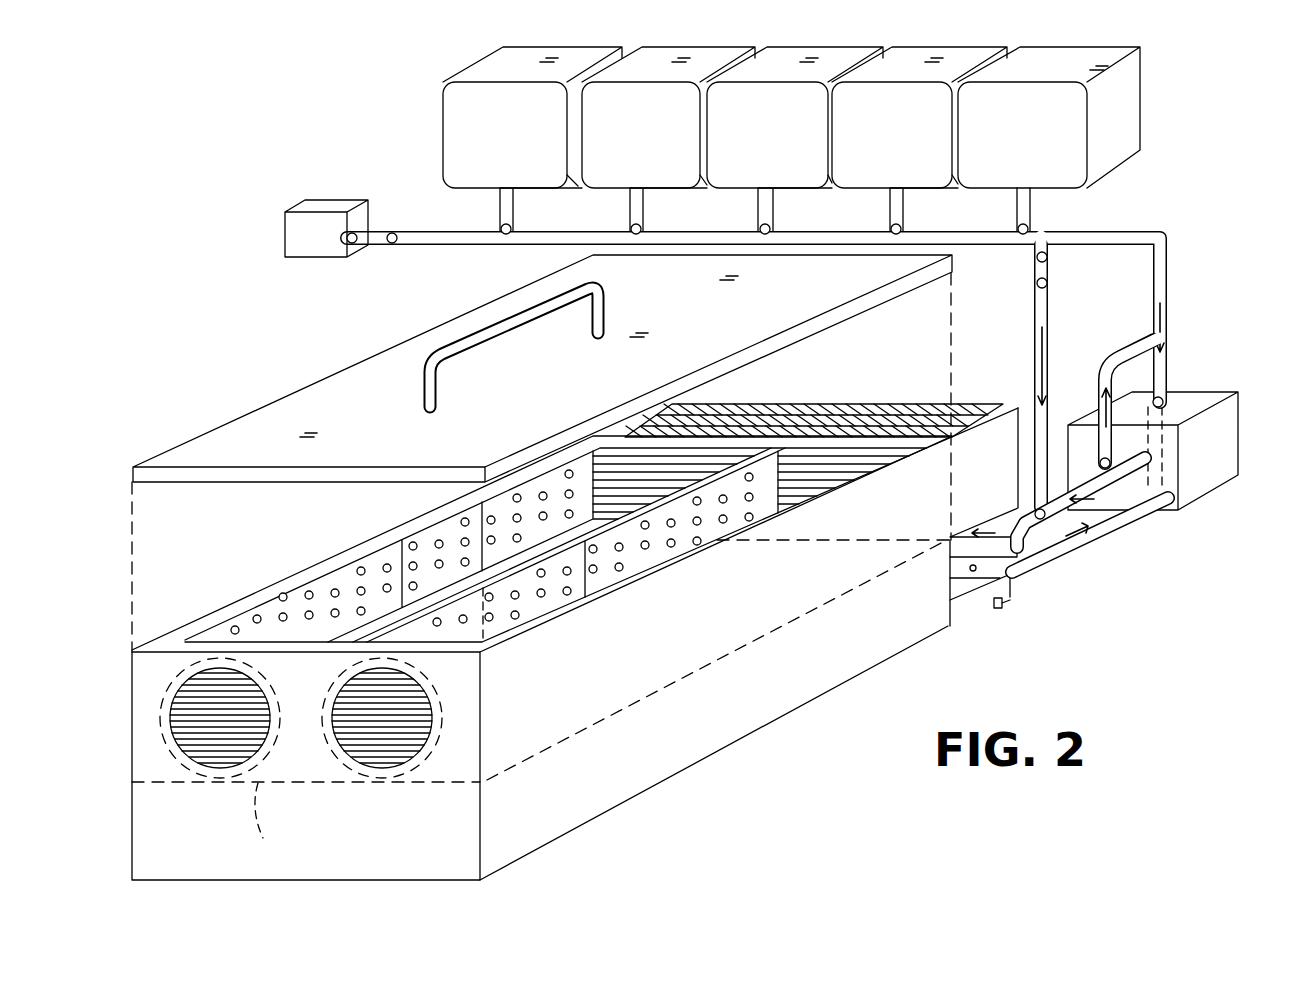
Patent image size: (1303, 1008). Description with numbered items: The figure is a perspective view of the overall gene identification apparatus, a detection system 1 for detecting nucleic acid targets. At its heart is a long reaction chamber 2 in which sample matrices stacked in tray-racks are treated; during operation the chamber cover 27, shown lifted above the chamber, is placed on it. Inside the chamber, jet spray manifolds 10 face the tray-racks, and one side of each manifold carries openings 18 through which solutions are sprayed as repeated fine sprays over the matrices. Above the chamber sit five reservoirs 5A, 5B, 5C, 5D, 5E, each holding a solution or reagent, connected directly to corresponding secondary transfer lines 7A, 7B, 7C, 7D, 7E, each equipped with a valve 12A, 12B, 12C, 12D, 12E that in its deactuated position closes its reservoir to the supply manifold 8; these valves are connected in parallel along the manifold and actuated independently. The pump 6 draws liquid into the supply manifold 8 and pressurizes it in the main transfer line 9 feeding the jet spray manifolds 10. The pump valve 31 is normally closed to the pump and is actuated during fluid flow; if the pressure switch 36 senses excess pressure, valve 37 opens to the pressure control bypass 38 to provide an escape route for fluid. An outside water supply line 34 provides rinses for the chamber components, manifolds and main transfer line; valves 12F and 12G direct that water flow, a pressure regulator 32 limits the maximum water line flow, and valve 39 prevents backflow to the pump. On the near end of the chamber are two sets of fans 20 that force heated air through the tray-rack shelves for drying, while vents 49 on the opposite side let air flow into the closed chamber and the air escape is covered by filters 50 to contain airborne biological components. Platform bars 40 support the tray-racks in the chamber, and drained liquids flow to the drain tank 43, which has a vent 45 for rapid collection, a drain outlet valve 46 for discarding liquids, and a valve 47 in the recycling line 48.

The detection system 1 is at (780, 750).
The reaction chamber 2 is at (260, 580).
The reservoir 5A is at (465, 178).
The reservoir 5B is at (592, 178).
The reservoir 5C is at (722, 178).
The reservoir 5D is at (868, 178).
The reservoir 5E is at (997, 180).
The pump 6 is at (1238, 433).
The secondary transfer line 7A is at (500, 221).
The secondary transfer line 7B is at (630, 222).
The secondary transfer line 7C is at (758, 222).
The secondary transfer line 7D is at (890, 222).
The secondary transfer line 7E is at (1017, 222).
The supply manifold 8 is at (1148, 268).
The main transfer line 9 is at (1095, 497).
The jet spray manifold 10 is at (399, 526).
The valve 12A is at (512, 228).
The valve 12B is at (642, 228).
The valve 12C is at (771, 228).
The valve 12D is at (902, 228).
The valve 12E is at (1029, 228).
The valve 12F is at (351, 242).
The valve 12G is at (1036, 261).
The openings 18 is at (356, 577).
The fans 20 is at (150, 676).
The chamber cover 27 is at (270, 420).
The pump valve 31 is at (1161, 397).
The pressure regulator 32 is at (392, 244).
The outside water supply line 34 is at (291, 228).
The pressure switch 36 is at (1048, 284).
The valve 37 is at (1103, 458).
The pressure control bypass 38 is at (1121, 350).
The valve 39 is at (1041, 520).
The platform bars 40 is at (244, 823).
The drain tank 43 is at (998, 609).
The vent 45 is at (975, 572).
The drain outlet valve 46 is at (1003, 604).
The valve 47 is at (1165, 455).
The recycling line 48 is at (1092, 534).
The vents 49 is at (836, 478).
The filters 50 is at (882, 410).